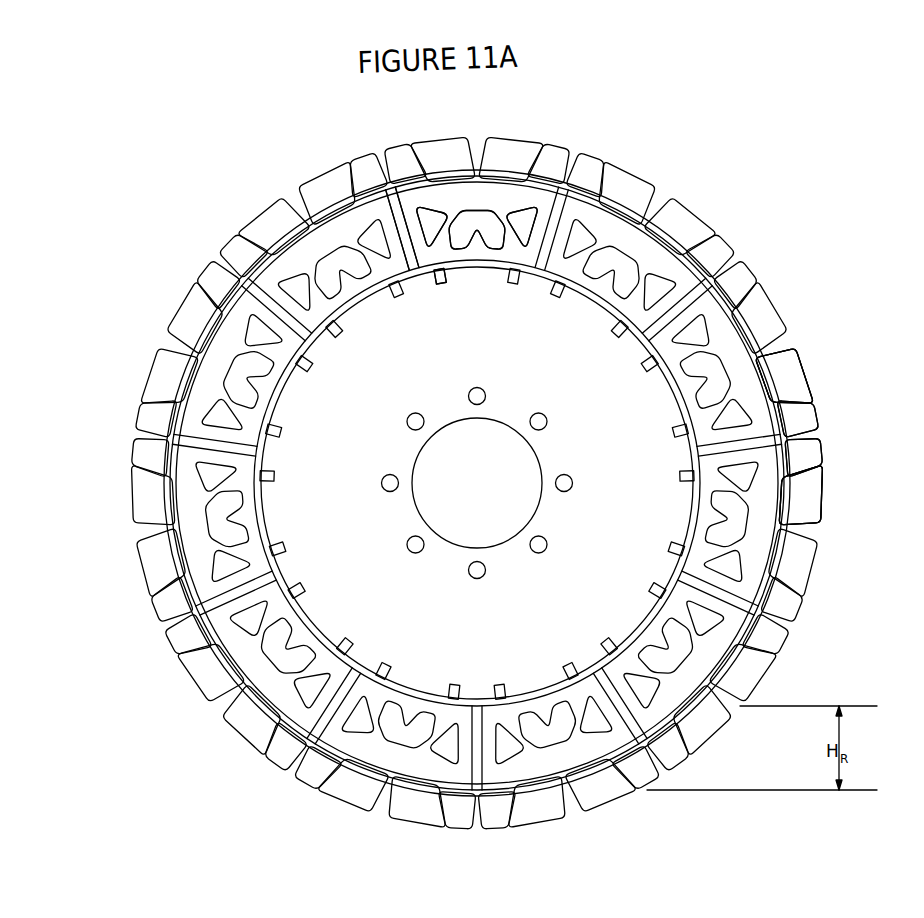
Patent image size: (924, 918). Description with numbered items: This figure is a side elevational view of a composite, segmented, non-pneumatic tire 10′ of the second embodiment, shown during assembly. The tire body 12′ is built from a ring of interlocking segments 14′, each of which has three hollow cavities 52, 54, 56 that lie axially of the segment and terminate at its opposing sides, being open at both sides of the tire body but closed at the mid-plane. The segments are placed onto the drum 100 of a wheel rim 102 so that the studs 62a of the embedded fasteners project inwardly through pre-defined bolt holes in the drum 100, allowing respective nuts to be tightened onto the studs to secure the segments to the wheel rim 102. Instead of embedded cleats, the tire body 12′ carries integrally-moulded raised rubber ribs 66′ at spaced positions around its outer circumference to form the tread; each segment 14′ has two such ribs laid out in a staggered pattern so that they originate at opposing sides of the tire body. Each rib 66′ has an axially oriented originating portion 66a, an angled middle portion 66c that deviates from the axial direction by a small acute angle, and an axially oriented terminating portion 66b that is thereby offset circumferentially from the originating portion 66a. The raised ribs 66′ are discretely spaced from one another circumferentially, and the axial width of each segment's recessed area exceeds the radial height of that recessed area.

The composite, segmented, non-pneumatic tire 10′ is at (690, 107).
The tire body 12′ is at (715, 222).
The segment 14′ is at (622, 232).
The cavity 52 is at (418, 220).
The cavity 54 is at (473, 217).
The cavity 56 is at (523, 240).
The stud 62a is at (438, 284).
The raised rubber rib 66′ is at (792, 392).
The originating portion 66a is at (818, 510).
The terminating portion 66b is at (797, 375).
The angled middle portion 66c is at (808, 417).
The drum 100 is at (595, 307).
The wheel rim 102 is at (616, 554).